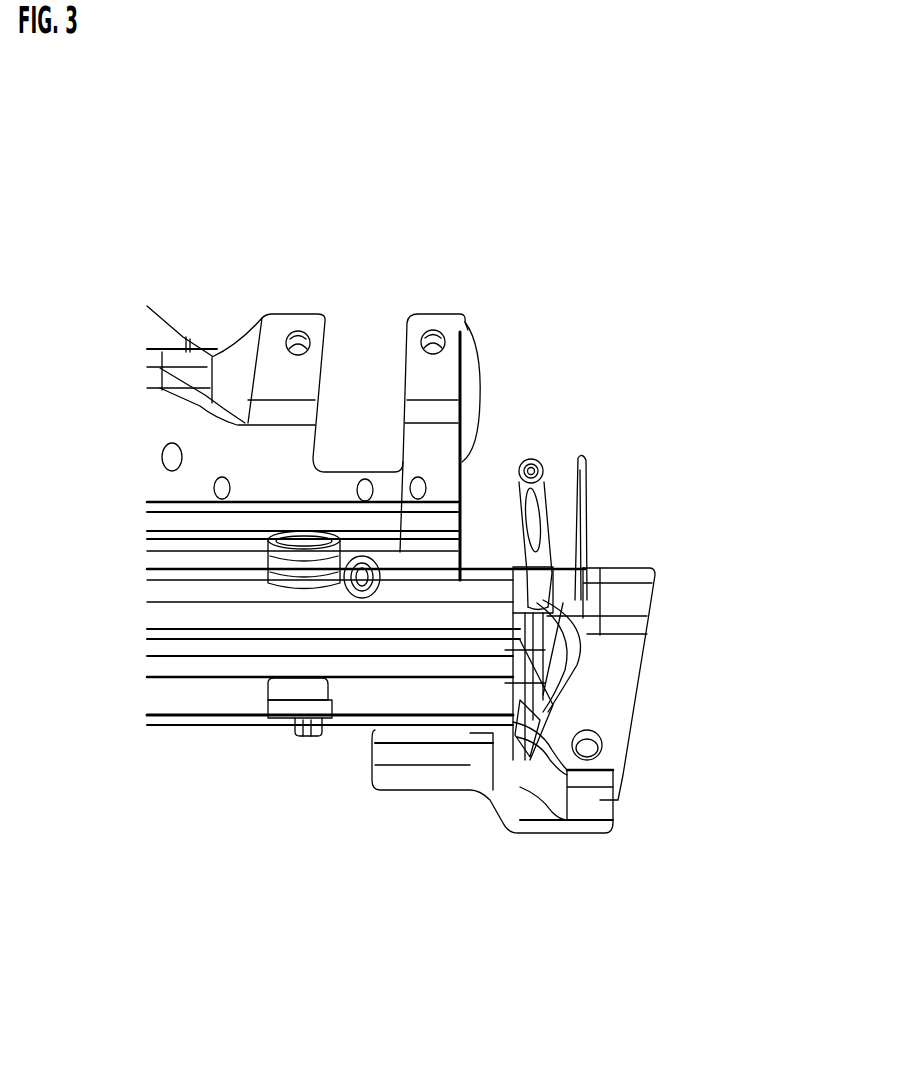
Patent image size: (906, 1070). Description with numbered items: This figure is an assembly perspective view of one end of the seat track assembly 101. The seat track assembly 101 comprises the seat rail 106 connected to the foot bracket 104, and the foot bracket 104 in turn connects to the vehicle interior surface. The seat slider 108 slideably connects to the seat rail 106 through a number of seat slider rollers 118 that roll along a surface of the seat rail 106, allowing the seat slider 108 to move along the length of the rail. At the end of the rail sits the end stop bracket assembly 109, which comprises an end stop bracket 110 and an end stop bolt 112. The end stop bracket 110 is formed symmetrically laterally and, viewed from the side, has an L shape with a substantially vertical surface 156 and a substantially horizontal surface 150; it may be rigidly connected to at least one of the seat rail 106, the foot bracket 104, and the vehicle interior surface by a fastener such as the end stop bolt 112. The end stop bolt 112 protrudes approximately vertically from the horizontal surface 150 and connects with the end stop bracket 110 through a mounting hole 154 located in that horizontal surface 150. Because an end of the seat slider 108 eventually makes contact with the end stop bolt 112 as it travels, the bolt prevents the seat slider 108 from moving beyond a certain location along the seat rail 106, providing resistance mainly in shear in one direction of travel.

The seat track assembly 101 is at (740, 142).
The foot bracket 104 is at (585, 836).
The seat rail 106 is at (212, 727).
The seat slider 108 is at (337, 458).
The end stop bracket assembly 109 is at (508, 434).
The end stop bracket 110 is at (587, 538).
The end stop bolt 112 is at (519, 484).
The seat slider rollers 118 is at (360, 600).
The horizontal surface 150 is at (515, 645).
The mounting hole 154 is at (578, 632).
The vertical surface 156 is at (583, 477).